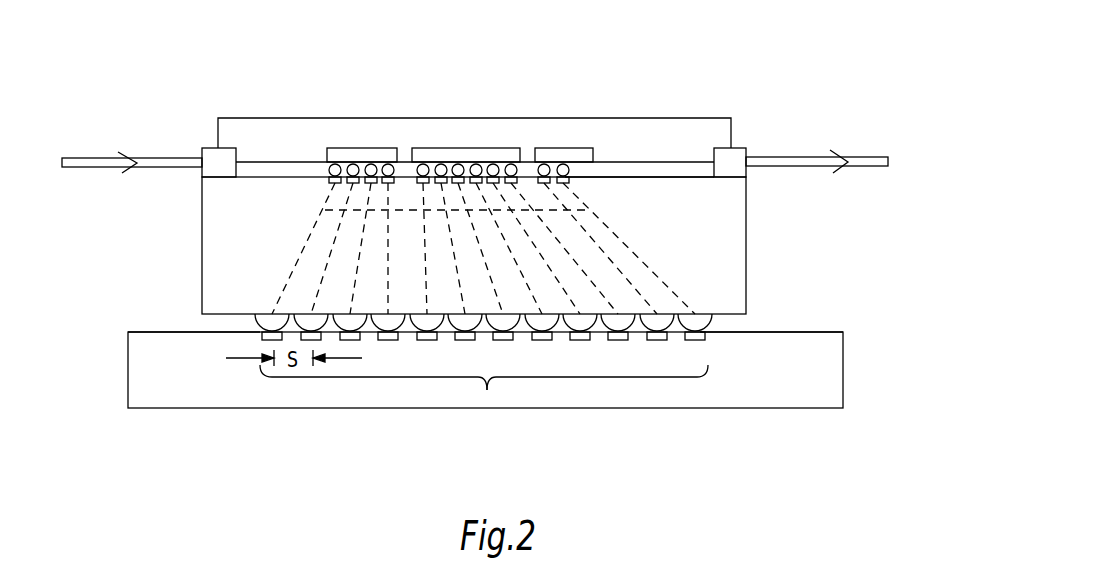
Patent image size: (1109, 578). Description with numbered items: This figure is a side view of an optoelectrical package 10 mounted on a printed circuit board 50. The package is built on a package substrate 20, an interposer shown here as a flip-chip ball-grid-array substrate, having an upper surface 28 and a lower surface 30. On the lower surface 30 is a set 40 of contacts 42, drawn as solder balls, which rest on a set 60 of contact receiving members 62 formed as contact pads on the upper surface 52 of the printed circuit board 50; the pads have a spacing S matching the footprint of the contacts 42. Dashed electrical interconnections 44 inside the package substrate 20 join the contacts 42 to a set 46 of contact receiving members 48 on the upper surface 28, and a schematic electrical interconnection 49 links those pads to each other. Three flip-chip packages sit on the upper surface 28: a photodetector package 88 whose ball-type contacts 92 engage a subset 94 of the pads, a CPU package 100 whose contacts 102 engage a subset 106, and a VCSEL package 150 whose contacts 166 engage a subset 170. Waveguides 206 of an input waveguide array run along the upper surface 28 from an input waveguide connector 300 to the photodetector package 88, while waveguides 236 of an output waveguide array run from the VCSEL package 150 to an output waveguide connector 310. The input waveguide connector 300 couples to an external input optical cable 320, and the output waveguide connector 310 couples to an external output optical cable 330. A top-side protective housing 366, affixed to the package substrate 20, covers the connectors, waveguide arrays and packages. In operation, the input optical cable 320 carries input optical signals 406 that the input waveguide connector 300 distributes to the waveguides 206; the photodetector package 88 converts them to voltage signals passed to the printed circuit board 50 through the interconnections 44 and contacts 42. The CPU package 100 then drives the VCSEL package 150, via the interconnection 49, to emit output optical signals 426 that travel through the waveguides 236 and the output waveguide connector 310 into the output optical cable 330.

The optoelectrical package 10 is at (713, 53).
The package substrate 20 is at (746, 250).
The upper surface 28 is at (692, 174).
The lower surface 30 is at (206, 331).
The set of contacts 40 is at (256, 321).
The contacts 42 is at (267, 322).
The electrical interconnections 44 is at (300, 243).
The set of contact receiving members 46 is at (323, 185).
The contact receiving members 48 is at (562, 188).
The electrical interconnection 49 is at (587, 212).
The printed circuit board 50 is at (845, 368).
The upper surface 52 is at (835, 332).
The set of contact receiving members 60 is at (487, 390).
The contact receiving members 62 is at (698, 340).
The photodetector package 88 is at (353, 152).
The external contacts 92 is at (397, 170).
The subset of contact pads 94 is at (394, 186).
The CPU package 100 is at (457, 152).
The contacts 102 is at (520, 169).
The subset of contact pads 106 is at (472, 186).
The VCSEL package 150 is at (550, 152).
The contacts 166 is at (590, 128).
The subset of contact pads 170 is at (585, 190).
The waveguides 206 is at (257, 168).
The waveguides 236 is at (622, 172).
The input waveguide connector 300 is at (212, 150).
The output waveguide connector 310 is at (738, 152).
The input optical cable 320 is at (75, 167).
The output optical cable 330 is at (808, 158).
The top-side protective housing 366 is at (655, 118).
The input optical signals 406 is at (122, 173).
The output optical signals 426 is at (833, 173).